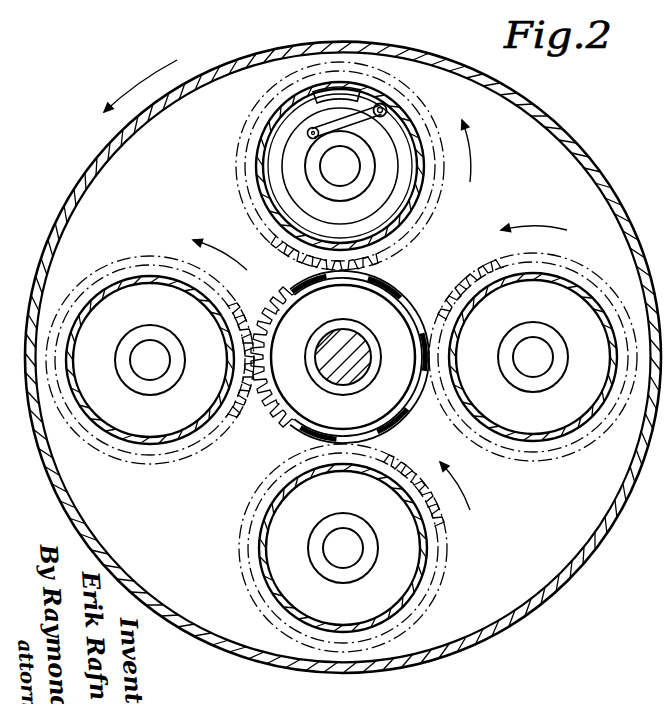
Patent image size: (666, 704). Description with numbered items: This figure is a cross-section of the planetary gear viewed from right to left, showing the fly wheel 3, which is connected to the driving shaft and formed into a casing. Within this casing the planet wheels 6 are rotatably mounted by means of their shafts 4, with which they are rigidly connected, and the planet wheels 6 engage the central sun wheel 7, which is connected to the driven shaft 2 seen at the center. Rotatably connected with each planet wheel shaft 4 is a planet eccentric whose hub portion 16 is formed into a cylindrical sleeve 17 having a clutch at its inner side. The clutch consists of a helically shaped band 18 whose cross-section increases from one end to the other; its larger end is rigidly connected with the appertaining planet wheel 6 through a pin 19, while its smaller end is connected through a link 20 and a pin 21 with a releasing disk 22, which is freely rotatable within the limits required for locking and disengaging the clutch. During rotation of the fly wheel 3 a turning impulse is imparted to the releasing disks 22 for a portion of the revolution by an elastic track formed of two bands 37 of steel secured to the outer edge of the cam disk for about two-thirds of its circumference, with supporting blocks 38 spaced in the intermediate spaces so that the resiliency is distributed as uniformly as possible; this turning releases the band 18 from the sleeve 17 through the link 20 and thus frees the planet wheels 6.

The driven shaft 2 is at (318, 375).
The fly wheel 3 is at (530, 112).
The shaft 4 is at (355, 178).
The planet wheel 6 is at (272, 258).
The sun wheel 7 is at (272, 306).
The hub portion 16 is at (375, 160).
The cylindrical sleeve 17 is at (410, 125).
The helically shaped band 18 is at (268, 128).
The pin 19 is at (333, 96).
The link 20 is at (362, 121).
The pin 21 is at (308, 137).
The releasing disk 22 is at (283, 162).
The band 37 is at (410, 292).
The supporting block 38 is at (405, 410).